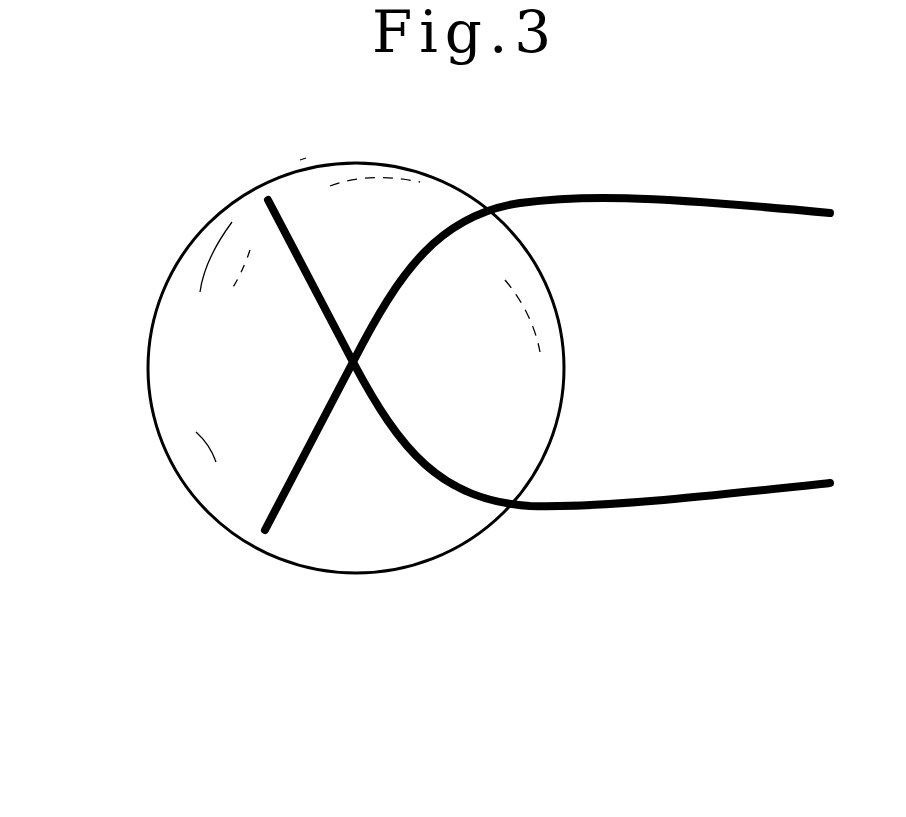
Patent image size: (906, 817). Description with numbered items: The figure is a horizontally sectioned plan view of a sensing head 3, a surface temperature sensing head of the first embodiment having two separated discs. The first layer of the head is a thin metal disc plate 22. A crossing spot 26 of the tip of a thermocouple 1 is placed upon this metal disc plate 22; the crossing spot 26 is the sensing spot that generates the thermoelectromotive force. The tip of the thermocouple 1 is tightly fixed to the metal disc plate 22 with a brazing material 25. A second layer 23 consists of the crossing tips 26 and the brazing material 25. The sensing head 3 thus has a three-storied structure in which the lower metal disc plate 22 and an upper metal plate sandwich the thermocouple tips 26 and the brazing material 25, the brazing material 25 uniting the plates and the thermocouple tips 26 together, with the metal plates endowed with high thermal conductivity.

The thermocouple 1 is at (547, 338).
The sensing head 3 is at (308, 396).
The metal disc plate 22 is at (384, 565).
The second layer 23 is at (283, 380).
The brazing material 25 is at (262, 333).
The crossing spot 26 is at (358, 362).